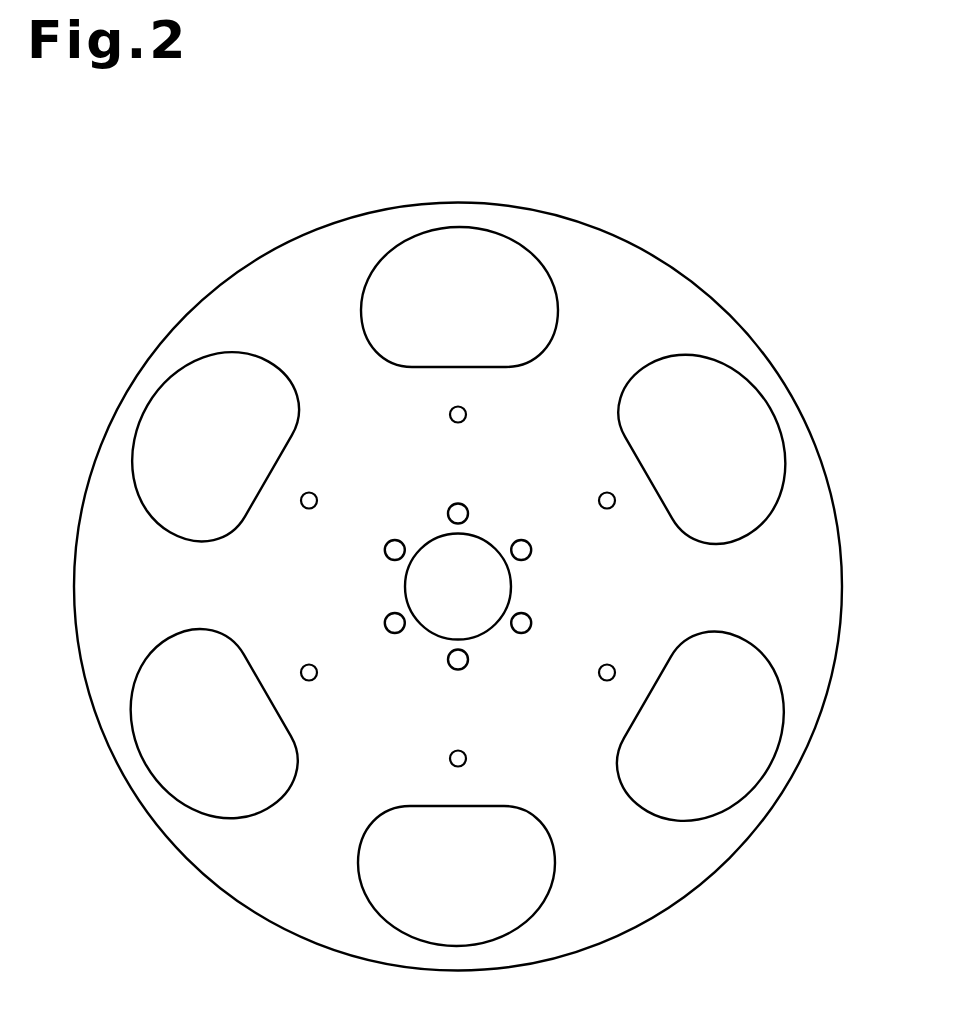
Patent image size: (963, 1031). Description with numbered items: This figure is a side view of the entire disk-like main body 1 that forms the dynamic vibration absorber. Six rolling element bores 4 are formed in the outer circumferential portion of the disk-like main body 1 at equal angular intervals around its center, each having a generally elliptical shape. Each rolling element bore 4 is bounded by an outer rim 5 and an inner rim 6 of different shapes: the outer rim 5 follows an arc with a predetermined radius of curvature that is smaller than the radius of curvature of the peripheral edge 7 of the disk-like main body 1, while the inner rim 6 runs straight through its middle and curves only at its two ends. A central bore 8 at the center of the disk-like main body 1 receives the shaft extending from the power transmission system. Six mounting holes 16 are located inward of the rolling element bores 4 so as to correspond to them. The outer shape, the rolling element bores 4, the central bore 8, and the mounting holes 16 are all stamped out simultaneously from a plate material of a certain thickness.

The disk-like main body 1 is at (458, 558).
The rolling element bore 4 is at (594, 395).
The outer rim 5 is at (432, 243).
The inner rim 6 is at (490, 366).
The peripheral edge 7 is at (451, 203).
The central bore 8 is at (512, 582).
The mounting hole 16 is at (460, 424).